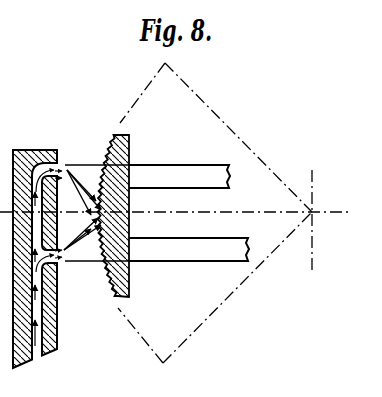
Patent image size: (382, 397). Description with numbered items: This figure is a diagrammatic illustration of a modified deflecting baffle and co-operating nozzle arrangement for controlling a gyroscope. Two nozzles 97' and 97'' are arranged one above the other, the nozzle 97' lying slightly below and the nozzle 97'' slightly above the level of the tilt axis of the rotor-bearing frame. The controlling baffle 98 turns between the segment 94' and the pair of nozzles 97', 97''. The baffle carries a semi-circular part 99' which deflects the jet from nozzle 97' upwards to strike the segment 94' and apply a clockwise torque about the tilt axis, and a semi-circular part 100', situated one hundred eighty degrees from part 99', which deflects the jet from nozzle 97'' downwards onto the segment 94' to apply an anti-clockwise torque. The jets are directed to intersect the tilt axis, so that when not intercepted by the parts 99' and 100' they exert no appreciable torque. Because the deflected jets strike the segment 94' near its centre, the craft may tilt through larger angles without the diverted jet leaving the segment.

The nozzle 97' is at (58, 259).
The nozzle 97'' is at (47, 143).
The semi-circular part 100' is at (92, 156).
The semi-circular part 99' is at (95, 270).
The segment 94' is at (139, 195).
The controlling baffle 98 is at (191, 181).